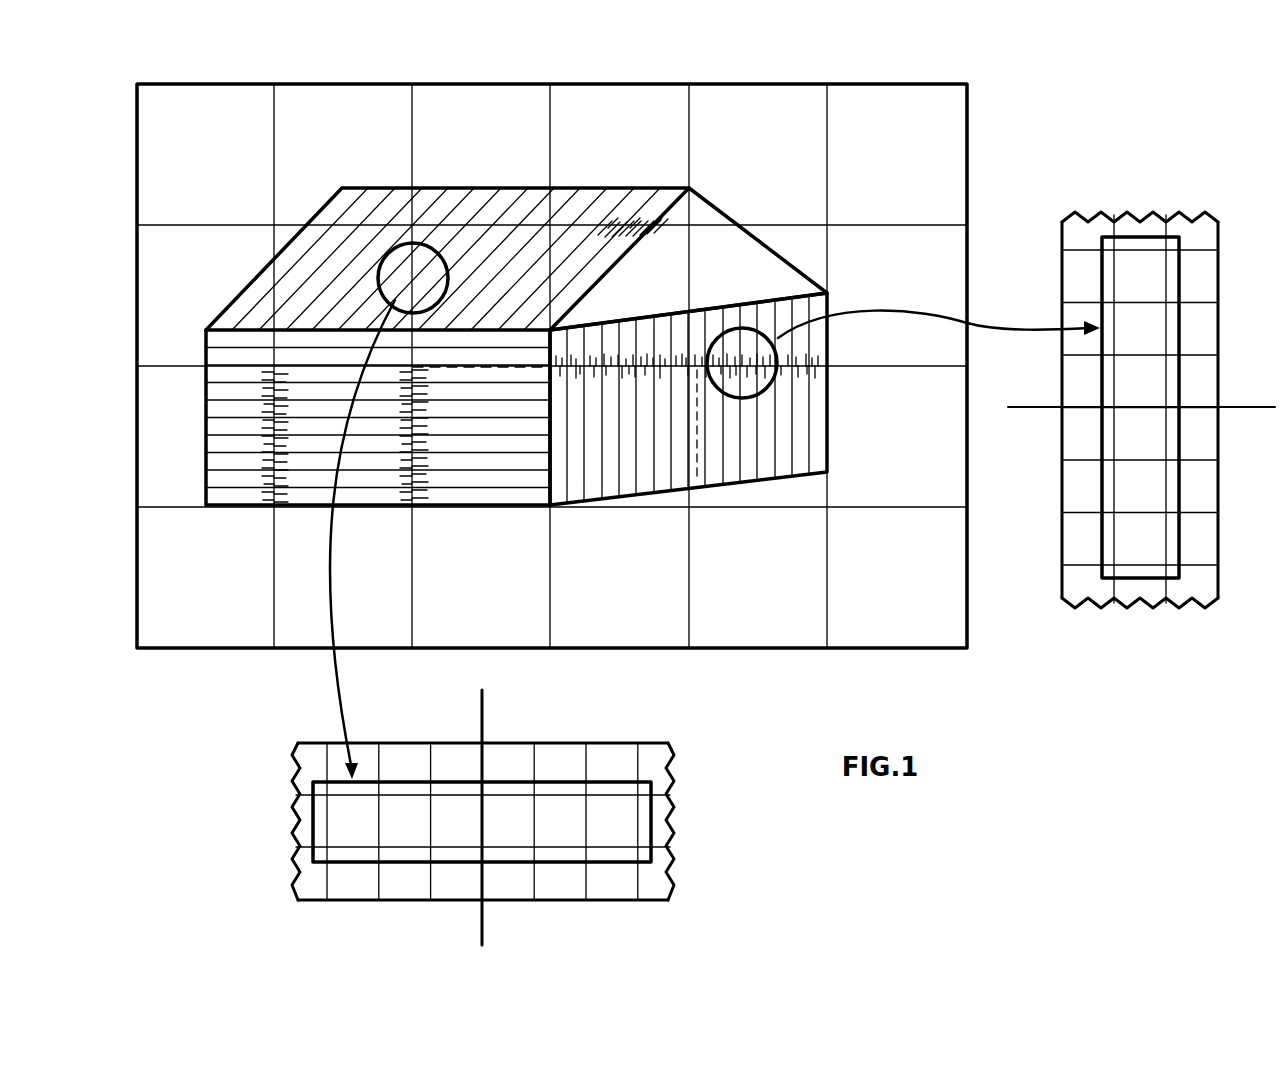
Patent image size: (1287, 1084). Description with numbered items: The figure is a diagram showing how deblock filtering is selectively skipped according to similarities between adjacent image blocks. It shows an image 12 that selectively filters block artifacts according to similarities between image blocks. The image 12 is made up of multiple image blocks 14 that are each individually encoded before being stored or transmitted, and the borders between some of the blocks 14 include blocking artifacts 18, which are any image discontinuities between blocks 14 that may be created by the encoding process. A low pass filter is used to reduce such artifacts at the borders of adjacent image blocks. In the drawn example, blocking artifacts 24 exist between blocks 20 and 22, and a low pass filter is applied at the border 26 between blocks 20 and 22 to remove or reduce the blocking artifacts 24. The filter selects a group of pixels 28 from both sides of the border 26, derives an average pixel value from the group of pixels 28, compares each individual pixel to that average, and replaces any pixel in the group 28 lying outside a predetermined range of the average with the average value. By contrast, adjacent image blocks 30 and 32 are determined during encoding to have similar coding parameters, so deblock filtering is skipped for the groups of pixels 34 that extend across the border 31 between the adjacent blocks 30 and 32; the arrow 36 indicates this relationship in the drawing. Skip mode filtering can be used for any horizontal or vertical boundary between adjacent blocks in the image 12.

The image 12 is at (118, 117).
The image blocks 14 is at (137, 156).
The blocking artifacts 18 is at (623, 200).
The block 20 is at (822, 248).
The block 22 is at (822, 483).
The blocking artifacts 24 is at (1020, 326).
The border 26 is at (815, 368).
The group of pixels 28 is at (1141, 235).
The adjacent image block 30 is at (287, 233).
The border 31 is at (408, 233).
The adjacent image block 32 is at (445, 233).
The groups of pixels 34 is at (655, 820).
The projection arrow to row data 36 is at (352, 690).